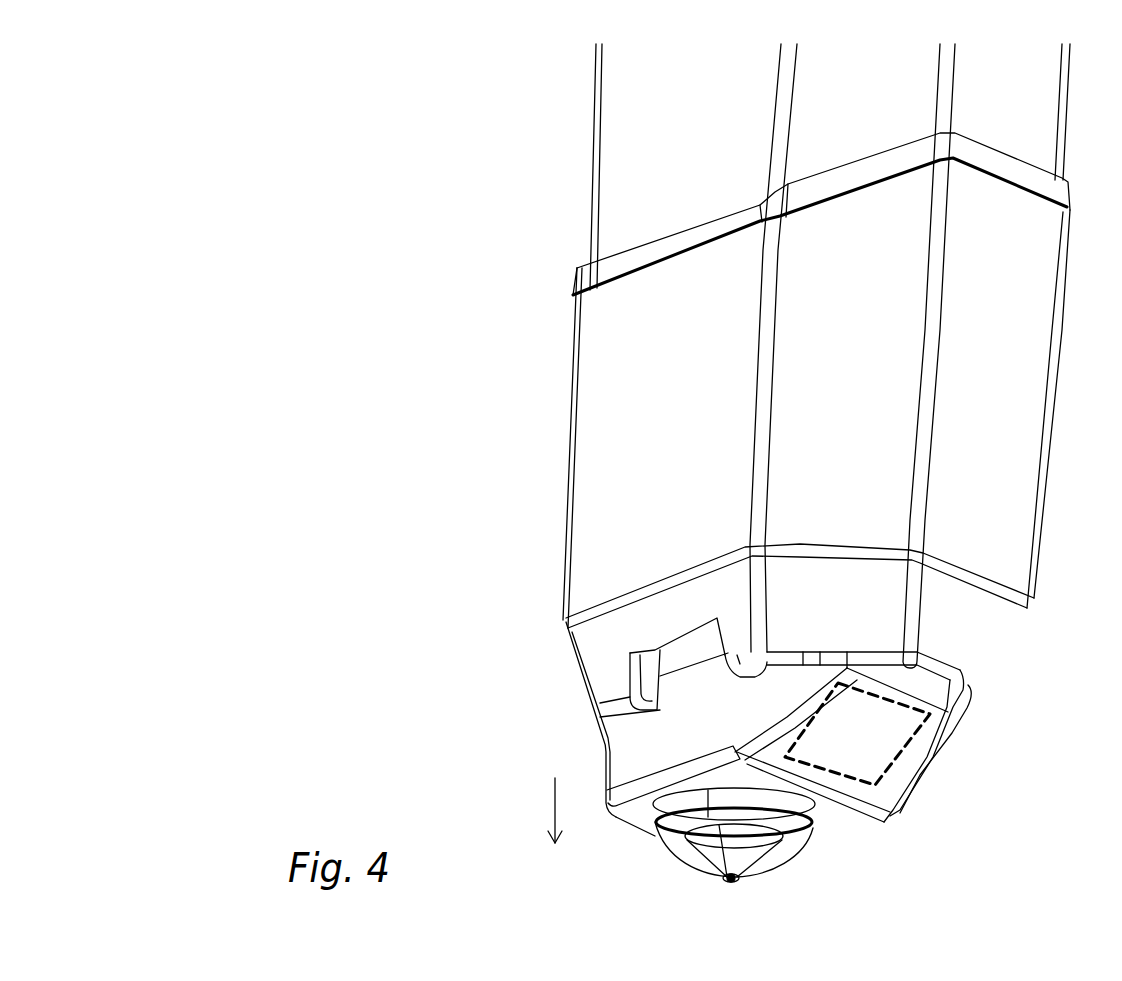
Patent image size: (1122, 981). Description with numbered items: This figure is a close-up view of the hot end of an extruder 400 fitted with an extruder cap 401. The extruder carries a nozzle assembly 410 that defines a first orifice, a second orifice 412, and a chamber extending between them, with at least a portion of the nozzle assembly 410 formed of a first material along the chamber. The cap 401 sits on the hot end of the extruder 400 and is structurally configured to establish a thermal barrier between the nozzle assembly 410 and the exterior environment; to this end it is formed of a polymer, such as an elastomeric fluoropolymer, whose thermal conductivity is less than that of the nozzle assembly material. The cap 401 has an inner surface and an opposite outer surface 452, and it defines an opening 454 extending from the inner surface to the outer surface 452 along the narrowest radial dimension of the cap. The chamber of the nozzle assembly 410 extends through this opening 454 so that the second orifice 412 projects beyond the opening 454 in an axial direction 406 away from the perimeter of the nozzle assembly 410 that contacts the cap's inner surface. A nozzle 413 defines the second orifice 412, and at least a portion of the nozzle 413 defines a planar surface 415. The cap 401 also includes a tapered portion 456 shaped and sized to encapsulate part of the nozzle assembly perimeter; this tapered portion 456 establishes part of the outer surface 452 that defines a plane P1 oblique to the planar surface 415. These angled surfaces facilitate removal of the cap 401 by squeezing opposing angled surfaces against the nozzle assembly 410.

The extruder 400 is at (372, 66).
The nozzle assembly 410 is at (589, 201).
The extruder cap 401 is at (573, 388).
The outer surface 452 is at (587, 565).
The axial direction 406 is at (555, 790).
The planar surface 415 is at (670, 847).
The second orifice 412 is at (730, 883).
The nozzle 413 is at (816, 860).
The opening 454 is at (847, 823).
The tapered portion 456 is at (890, 800).
The plane P1 is at (892, 767).